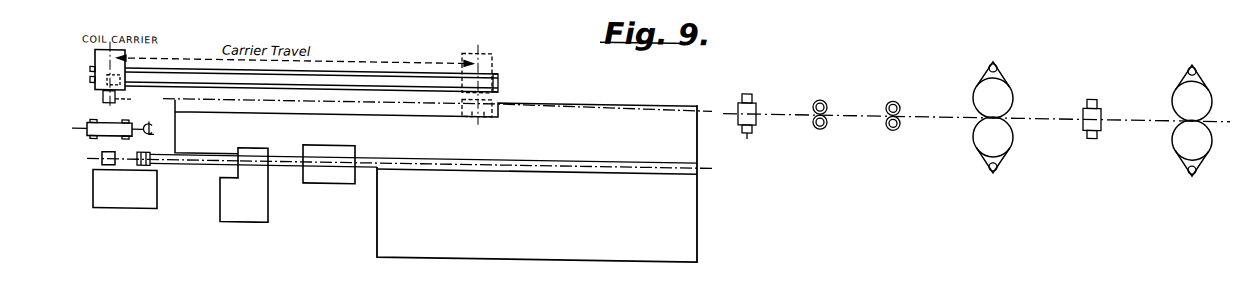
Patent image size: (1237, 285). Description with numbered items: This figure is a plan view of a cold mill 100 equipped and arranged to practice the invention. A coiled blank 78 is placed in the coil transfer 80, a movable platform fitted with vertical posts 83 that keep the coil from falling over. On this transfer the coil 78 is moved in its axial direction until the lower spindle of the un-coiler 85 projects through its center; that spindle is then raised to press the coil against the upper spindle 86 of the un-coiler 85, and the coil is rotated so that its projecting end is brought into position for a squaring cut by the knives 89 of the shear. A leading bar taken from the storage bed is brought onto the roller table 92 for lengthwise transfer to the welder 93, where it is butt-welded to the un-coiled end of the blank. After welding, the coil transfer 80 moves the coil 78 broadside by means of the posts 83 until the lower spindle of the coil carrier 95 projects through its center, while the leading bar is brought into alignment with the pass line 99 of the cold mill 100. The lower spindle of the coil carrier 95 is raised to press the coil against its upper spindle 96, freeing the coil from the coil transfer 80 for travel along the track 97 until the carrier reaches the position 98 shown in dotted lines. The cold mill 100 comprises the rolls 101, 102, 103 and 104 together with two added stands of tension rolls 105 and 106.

The coiled blank 78 is at (113, 150).
The coil transfer 80 is at (104, 119).
The vertical posts 83 is at (122, 126).
The un-coiler 85 is at (125, 203).
The upper spindle 86 is at (157, 195).
The knives 89 is at (240, 198).
The roller table 92 is at (431, 151).
The welder 93 is at (340, 162).
The coil carrier 95 is at (99, 74).
The upper spindle 96 is at (128, 94).
The track 97 is at (411, 151).
The position 98 is at (493, 75).
The pass line 99 is at (976, 97).
The cold mill 100 is at (970, 112).
The cold mill rolls 101 is at (743, 130).
The cold mill rolls 102 is at (810, 134).
The cold mill rolls 103 is at (887, 135).
The cold mill rolls 104 is at (1081, 137).
The stand of tension rolls 105 is at (1006, 118).
The stand of tension rolls 106 is at (1166, 120).